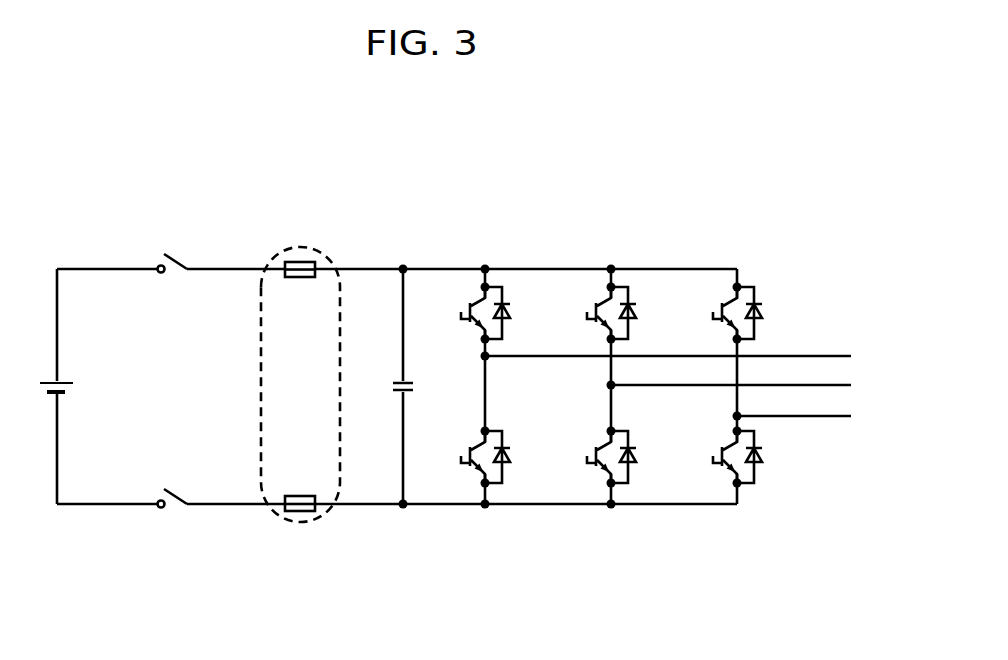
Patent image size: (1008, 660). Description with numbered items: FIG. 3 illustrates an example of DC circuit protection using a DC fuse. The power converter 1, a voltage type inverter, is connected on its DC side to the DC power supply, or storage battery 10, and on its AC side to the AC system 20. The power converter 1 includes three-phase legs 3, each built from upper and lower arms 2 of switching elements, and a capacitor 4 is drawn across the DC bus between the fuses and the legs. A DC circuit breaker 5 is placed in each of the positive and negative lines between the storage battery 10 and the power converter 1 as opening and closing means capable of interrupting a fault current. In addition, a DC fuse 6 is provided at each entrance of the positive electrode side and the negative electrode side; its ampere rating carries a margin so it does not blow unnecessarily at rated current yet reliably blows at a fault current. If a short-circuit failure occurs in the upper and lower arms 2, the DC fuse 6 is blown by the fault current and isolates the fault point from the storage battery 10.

The power converter 1 is at (709, 196).
The upper and lower arms 2 is at (512, 313).
The three-phase legs 3 is at (487, 524).
The smoothing capacitor 4 is at (393, 387).
The DC circuit breaker 5 is at (177, 262).
The DC fuse 6 is at (300, 278).
The DC power supply (storage battery) 10 is at (74, 387).
The AC system 20 is at (868, 372).